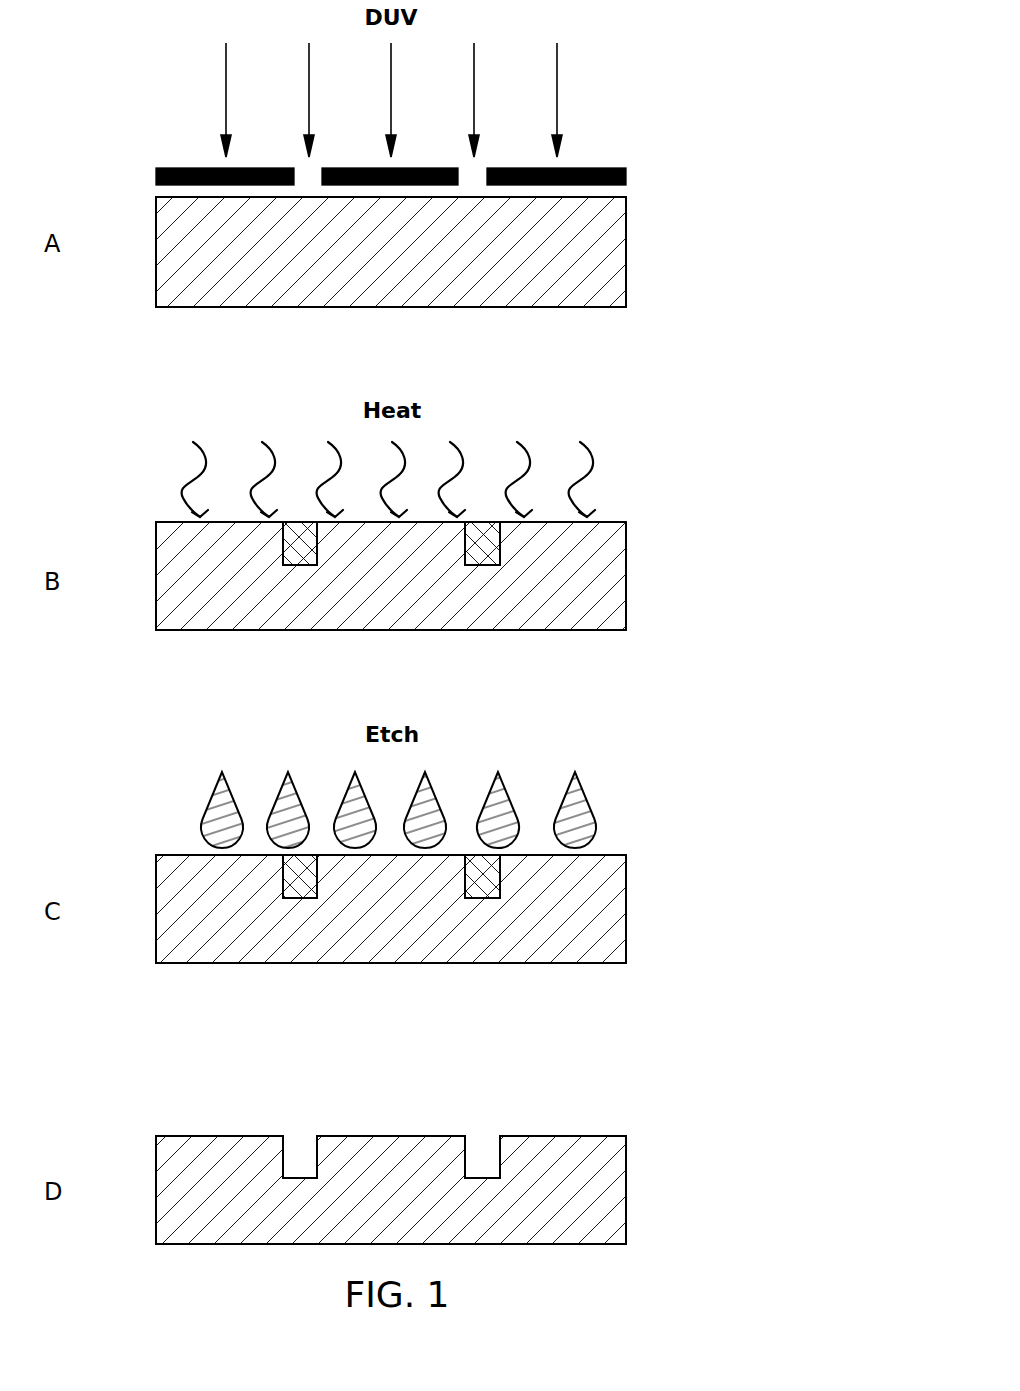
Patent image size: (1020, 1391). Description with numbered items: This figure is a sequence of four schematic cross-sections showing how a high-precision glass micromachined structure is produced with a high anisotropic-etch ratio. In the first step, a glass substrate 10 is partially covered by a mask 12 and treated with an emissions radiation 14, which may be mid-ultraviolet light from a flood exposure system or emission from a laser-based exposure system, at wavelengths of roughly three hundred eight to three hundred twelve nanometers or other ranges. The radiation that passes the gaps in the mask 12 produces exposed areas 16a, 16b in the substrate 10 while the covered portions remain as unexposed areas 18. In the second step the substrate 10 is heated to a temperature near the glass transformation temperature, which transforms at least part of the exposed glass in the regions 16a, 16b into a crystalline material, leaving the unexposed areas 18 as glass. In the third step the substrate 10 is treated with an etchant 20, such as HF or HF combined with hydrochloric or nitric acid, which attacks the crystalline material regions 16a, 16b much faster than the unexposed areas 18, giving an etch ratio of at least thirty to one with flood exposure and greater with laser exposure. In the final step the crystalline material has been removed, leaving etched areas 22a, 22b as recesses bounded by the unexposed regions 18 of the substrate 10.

The substrate 10 is at (590, 240).
The mask 12 is at (626, 172).
The emissions radiation 14 is at (557, 78).
The exposed area 16a is at (480, 547).
The exposed area 16b is at (300, 547).
The unexposed areas 18 is at (193, 536).
The etchant 20 is at (594, 800).
The etched area 22a is at (483, 1157).
The etched area 22b is at (297, 1157).